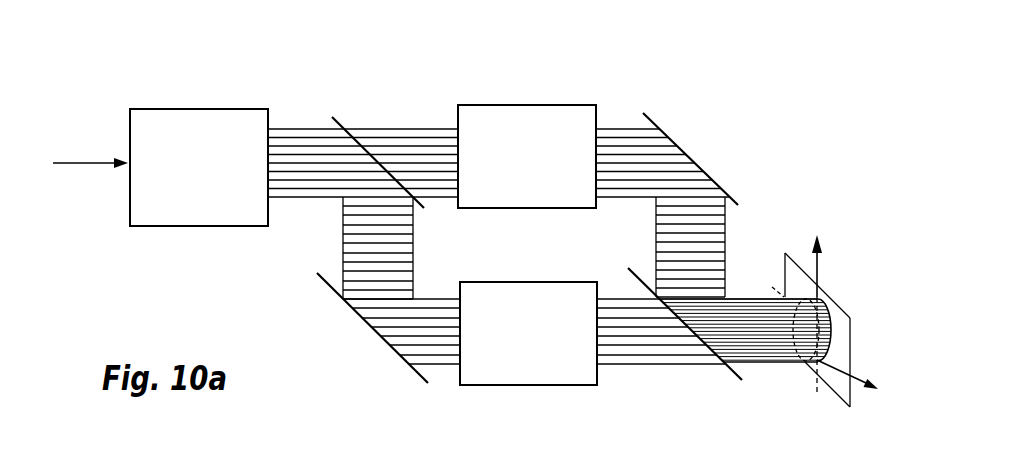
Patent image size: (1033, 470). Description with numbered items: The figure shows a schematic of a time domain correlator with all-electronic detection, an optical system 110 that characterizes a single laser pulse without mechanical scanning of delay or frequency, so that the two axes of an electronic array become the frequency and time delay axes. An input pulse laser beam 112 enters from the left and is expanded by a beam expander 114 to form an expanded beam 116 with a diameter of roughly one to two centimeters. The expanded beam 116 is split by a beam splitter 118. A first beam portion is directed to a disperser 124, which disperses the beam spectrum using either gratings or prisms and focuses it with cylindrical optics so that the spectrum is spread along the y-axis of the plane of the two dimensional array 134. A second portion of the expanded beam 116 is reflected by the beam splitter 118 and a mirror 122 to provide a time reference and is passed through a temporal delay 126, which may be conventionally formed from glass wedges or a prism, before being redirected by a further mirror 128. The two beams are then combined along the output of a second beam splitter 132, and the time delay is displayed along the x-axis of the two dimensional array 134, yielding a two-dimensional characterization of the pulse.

The optical system 110 is at (624, 70).
The input pulse laser beam 112 is at (98, 170).
The beam expander 114 is at (199, 167).
The expanded beam 116 is at (283, 128).
The beam splitter 118 is at (343, 118).
The mirror 122 is at (397, 356).
The disperser 124 is at (541, 178).
The temporal delay 126 is at (542, 356).
The mirror 128 is at (697, 162).
The beam splitter 132 is at (732, 373).
The two dimensional array 134 is at (832, 310).